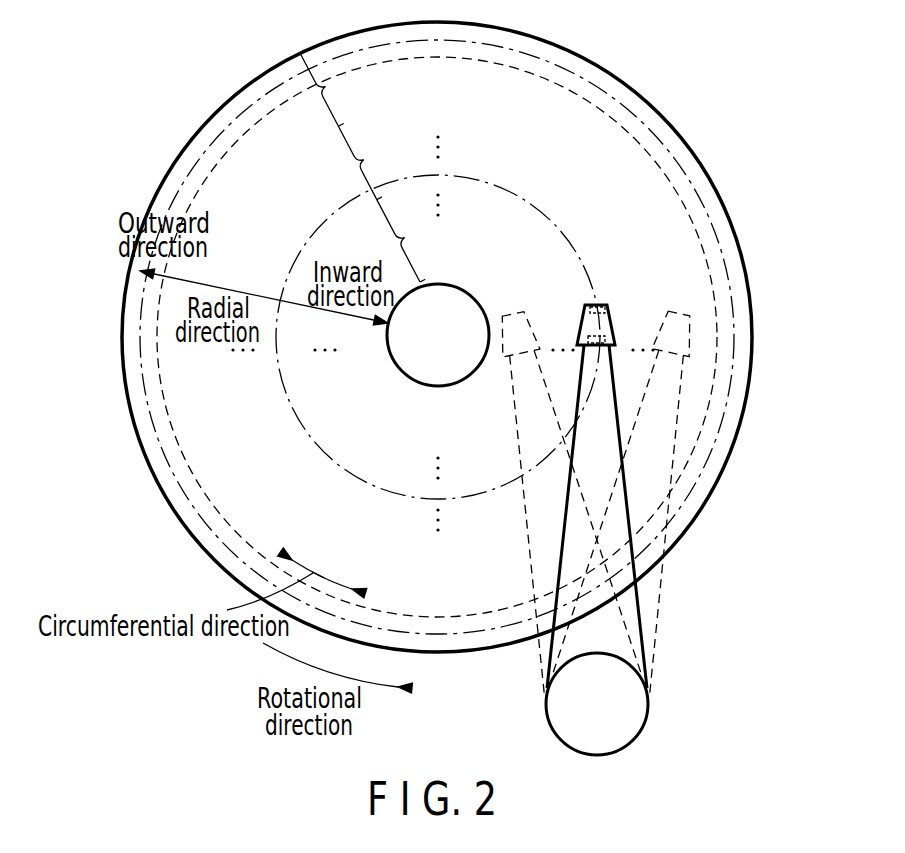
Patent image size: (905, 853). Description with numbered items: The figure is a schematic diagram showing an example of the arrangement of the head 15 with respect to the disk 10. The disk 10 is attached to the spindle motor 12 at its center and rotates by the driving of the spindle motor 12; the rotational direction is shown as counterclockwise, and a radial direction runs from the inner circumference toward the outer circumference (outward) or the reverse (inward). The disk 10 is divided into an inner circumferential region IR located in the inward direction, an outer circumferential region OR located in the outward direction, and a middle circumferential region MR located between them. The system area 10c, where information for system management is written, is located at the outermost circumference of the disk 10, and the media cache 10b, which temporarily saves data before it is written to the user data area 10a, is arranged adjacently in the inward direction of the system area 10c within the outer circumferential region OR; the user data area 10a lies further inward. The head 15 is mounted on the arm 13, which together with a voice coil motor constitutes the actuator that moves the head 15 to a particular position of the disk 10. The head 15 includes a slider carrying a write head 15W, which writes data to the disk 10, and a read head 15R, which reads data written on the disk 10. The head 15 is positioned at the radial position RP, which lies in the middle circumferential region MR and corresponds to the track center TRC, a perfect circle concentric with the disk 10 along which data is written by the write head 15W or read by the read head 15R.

The magnetic disk 10 is at (423, 337).
The user data area 10a is at (143, 333).
The media cache 10b is at (133, 382).
The system area 10c is at (125, 435).
The spindle motor 12 is at (407, 378).
The arm 13 is at (627, 505).
The head 15 is at (585, 320).
The write head 15W is at (608, 306).
The read head 15R is at (610, 333).
The radial position RP is at (603, 282).
The track center TRC is at (536, 204).
The outer circumferential region OR is at (336, 88).
The middle circumferential region MR is at (375, 162).
The inner circumferential region IR is at (407, 241).